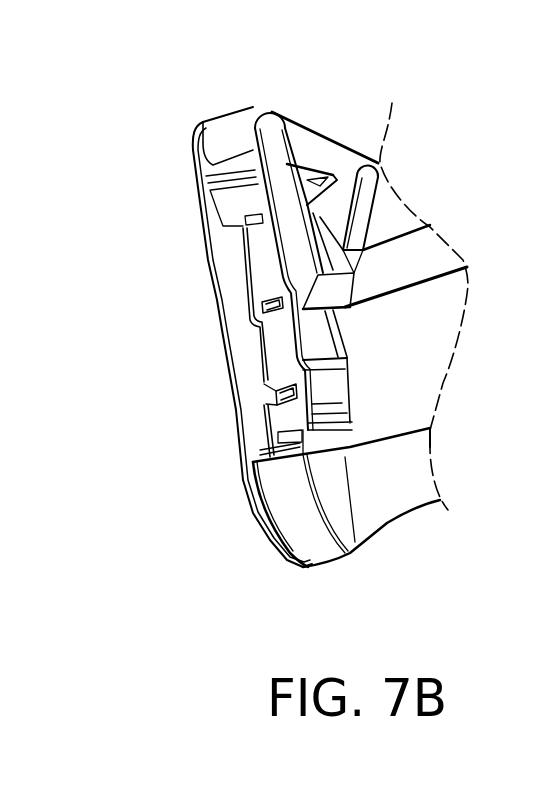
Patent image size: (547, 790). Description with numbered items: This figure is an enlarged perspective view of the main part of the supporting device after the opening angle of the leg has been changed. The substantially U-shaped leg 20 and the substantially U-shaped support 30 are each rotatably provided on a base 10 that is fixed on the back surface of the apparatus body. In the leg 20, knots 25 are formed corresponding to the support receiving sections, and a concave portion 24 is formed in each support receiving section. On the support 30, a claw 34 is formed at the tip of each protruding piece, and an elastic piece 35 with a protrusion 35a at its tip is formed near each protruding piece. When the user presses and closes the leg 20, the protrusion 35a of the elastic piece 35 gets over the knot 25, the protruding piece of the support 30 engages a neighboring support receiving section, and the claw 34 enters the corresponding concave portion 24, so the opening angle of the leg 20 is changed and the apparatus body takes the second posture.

The base 10 is at (323, 138).
The leg 20 is at (233, 260).
The concave portion 24 is at (258, 303).
The knot 25 is at (276, 291).
The support 30 is at (358, 215).
The claw 34 is at (292, 338).
The elastic piece 35 is at (355, 308).
The protrusion 35a is at (300, 322).